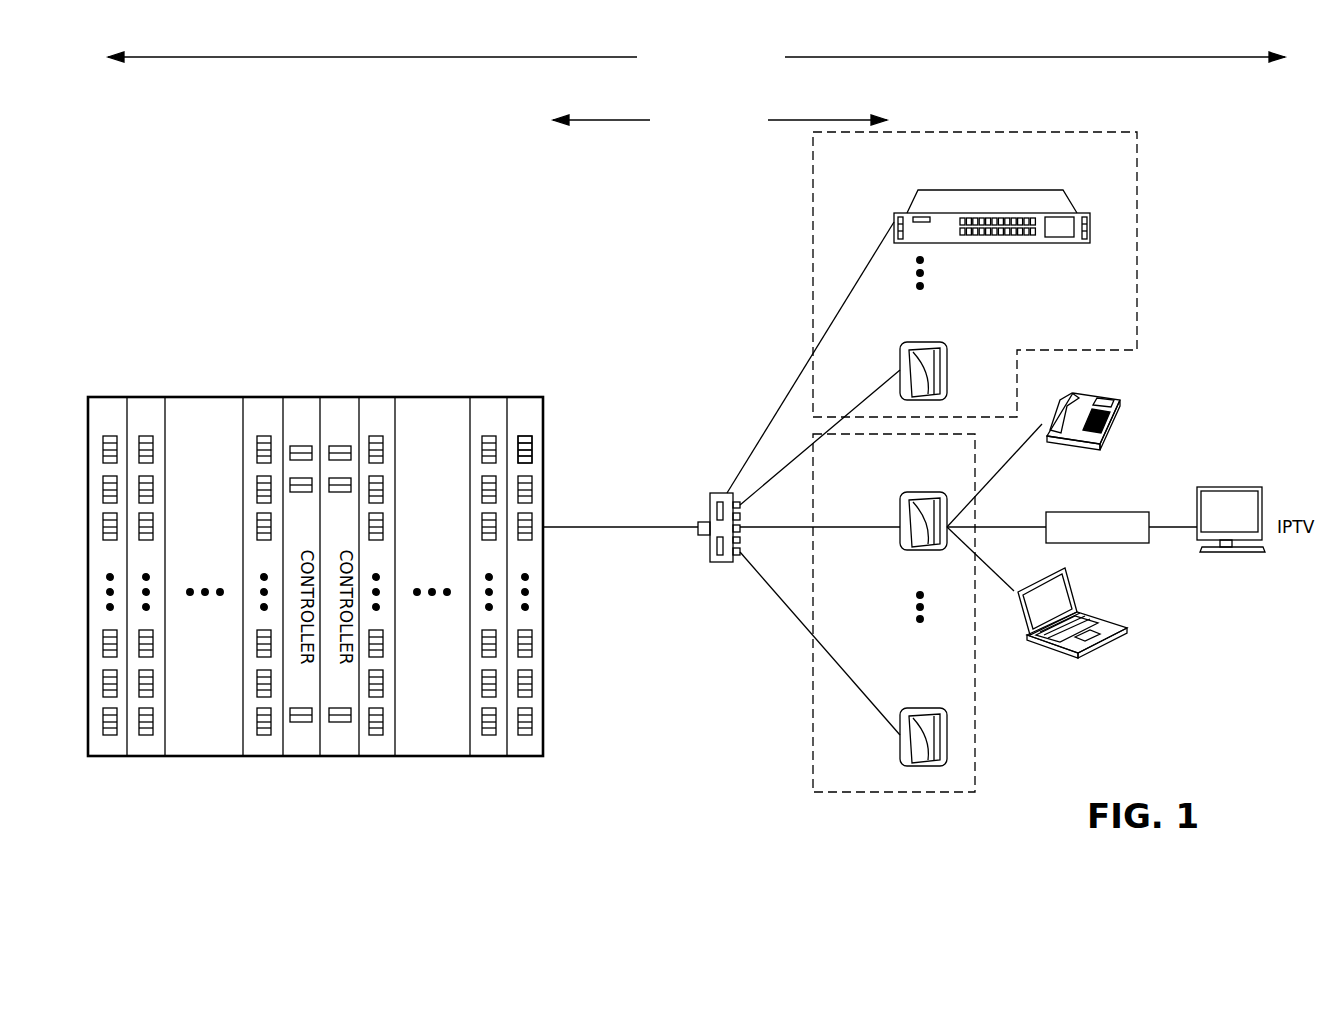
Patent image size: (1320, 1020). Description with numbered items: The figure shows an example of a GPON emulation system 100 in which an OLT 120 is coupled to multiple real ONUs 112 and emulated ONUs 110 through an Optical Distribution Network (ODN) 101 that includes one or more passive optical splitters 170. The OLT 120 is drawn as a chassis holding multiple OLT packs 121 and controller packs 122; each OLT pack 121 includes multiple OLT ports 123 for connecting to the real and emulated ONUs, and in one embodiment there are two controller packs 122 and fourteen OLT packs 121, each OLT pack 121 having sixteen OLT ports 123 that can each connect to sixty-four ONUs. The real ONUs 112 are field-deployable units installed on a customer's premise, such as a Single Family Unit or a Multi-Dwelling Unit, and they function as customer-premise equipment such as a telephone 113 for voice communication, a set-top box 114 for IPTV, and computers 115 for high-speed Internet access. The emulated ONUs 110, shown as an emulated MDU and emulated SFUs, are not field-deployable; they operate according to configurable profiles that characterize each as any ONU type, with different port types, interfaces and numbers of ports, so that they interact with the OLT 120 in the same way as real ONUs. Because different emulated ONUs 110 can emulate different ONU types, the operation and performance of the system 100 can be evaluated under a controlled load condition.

The GPON emulation system 100 is at (696, 56).
The Optical Distribution Network (ODN) 101 is at (720, 119).
The emulated ONUs 110 is at (1137, 222).
The real ONUs 112 is at (975, 760).
The telephone 113 is at (1160, 423).
The set-top box 114 is at (1137, 537).
The computers 115 is at (1141, 613).
The OLT 120 is at (338, 601).
The OLT packs 121 is at (108, 744).
The controller packs 122 is at (300, 744).
The OLT ports 123 is at (528, 447).
The passive optical splitters 170 is at (712, 558).